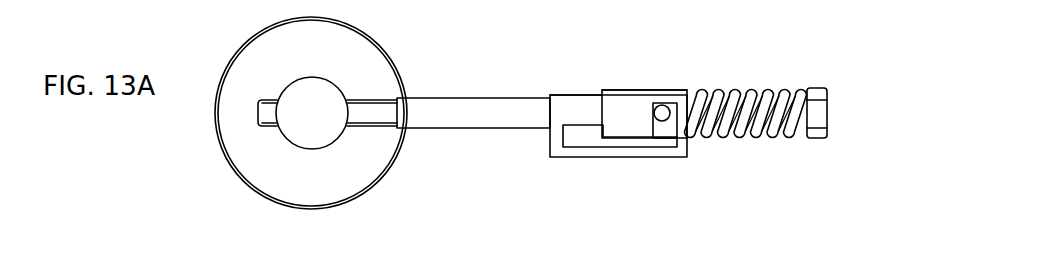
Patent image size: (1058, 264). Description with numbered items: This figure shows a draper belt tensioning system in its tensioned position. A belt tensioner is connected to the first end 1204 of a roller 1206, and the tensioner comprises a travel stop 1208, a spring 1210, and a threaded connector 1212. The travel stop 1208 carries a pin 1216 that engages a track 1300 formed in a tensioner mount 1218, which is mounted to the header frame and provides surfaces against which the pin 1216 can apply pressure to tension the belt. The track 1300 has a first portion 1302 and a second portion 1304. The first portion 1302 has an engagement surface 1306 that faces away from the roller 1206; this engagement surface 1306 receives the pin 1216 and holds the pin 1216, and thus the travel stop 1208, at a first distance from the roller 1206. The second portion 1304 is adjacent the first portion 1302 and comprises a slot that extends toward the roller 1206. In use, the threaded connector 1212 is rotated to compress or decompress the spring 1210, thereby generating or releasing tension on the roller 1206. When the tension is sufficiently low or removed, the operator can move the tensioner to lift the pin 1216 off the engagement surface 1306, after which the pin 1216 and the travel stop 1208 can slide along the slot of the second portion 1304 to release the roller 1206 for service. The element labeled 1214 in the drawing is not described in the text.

The first end 1204 is at (330, 135).
The roller 1206 is at (398, 62).
The travel stop 1208 is at (647, 90).
The spring 1210 is at (745, 138).
The threaded connector 1212 is at (470, 129).
The end cap 1214 is at (828, 106).
The pin 1216 is at (668, 122).
The tensioner mount 1218 is at (575, 98).
The track 1300 is at (550, 135).
The first portion 1302 is at (672, 90).
The second portion 1304 is at (583, 135).
The engagement surface 1306 is at (654, 113).